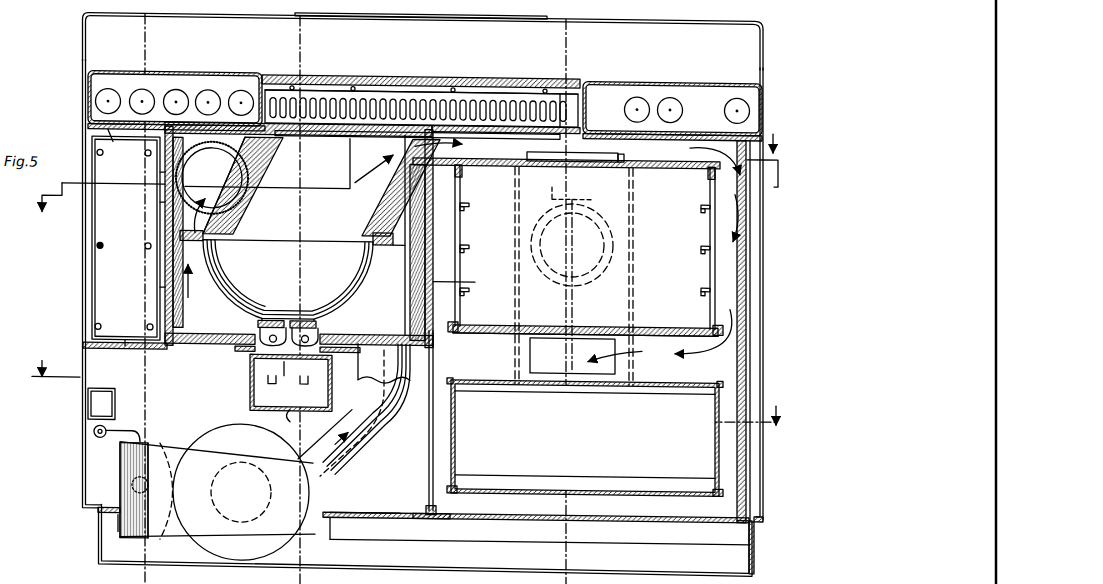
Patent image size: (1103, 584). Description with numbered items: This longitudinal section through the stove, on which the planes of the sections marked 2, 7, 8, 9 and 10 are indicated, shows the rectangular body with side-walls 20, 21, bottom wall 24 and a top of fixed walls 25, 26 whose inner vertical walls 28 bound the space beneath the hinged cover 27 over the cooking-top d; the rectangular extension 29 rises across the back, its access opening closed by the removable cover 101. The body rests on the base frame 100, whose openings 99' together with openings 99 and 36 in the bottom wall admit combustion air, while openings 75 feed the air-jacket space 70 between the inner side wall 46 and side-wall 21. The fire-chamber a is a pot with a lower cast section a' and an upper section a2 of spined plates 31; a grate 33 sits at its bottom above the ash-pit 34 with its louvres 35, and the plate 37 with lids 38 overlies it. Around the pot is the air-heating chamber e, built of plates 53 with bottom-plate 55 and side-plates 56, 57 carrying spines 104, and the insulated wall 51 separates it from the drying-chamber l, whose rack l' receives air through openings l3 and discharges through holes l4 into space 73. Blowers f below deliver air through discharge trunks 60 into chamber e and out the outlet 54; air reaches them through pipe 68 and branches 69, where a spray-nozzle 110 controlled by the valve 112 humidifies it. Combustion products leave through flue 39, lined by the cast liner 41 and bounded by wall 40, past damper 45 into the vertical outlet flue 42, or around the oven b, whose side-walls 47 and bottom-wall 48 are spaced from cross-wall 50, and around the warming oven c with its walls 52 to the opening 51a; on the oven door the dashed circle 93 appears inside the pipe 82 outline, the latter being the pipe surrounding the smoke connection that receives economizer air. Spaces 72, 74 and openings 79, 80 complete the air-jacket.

The rectangular extension 29 is at (83, 35).
The side-wall 20 is at (82, 479).
The side-wall 21 is at (762, 478).
The rectangular base frame 100 is at (98, 545).
The openings 99 is at (80, 524).
The openings 75 is at (751, 515).
The inner side wall 46 is at (746, 203).
The space 70 is at (750, 283).
The openings 36 is at (408, 514).
The bottom wall 24 is at (697, 514).
The removable cover 101 is at (470, 13).
The section line 10 is at (132, 20).
The section line 8 is at (285, 21).
The section line 7 is at (543, 18).
The section line 2 is at (405, 176).
The section line 9 is at (404, 385).
The fixed top wall 25 is at (182, 70).
The openings 79 is at (108, 87).
The space 73 is at (125, 88).
The inner vertical walls 28 is at (259, 73).
The fixed top wall 26 is at (641, 76).
The space 72 is at (678, 95).
The space 74 is at (332, 84).
The lids 38 is at (352, 120).
The cooking-top d is at (405, 92).
The hinged cover 27 is at (520, 78).
The openings 80 is at (557, 98).
The fire-chamber a is at (299, 235).
The upper section a2 is at (289, 162).
The outlet 54 is at (212, 177).
The plate 37 is at (321, 187).
The plates 31 is at (228, 184).
The spines 104 is at (186, 304).
The lower cast-metal section a' is at (240, 273).
The side-plate 57 is at (410, 262).
The air-heating chamber e is at (391, 276).
The grate 33 is at (300, 317).
The louvres 35 is at (322, 393).
The ash-pit 34 is at (293, 416).
The bottom-plate 55 is at (238, 348).
The discharge trunks 60 is at (372, 472).
The blowers f is at (217, 492).
The spray-nozzle 110 is at (150, 484).
The pipe 68 is at (119, 479).
The branches 69 is at (170, 458).
The electromagnetically-controlled valve 112 is at (95, 437).
The openings 99' is at (258, 537).
The cast liner 41 is at (654, 162).
The flue 39 is at (417, 144).
The damper 45 is at (594, 155).
The wall 40 is at (700, 191).
The baking oven b is at (585, 250).
The side-walls 47 is at (469, 217).
The inner cross-wall 50 is at (464, 282).
The vertical outlet flue 42 is at (636, 279).
The pipe 82 is at (540, 283).
The door window inner 93 is at (590, 285).
The bottom-wall 48 is at (660, 326).
The opening 51a is at (631, 341).
The warming-compartment c is at (585, 438).
The walls 52 is at (457, 432).
The drying-chamber l is at (125, 242).
The rack l' is at (102, 227).
The holes l4 is at (113, 140).
The openings l3 is at (125, 341).
The insulated wall 51 is at (165, 178).
The plates 53 is at (165, 200).
The side-plate 56 is at (165, 285).